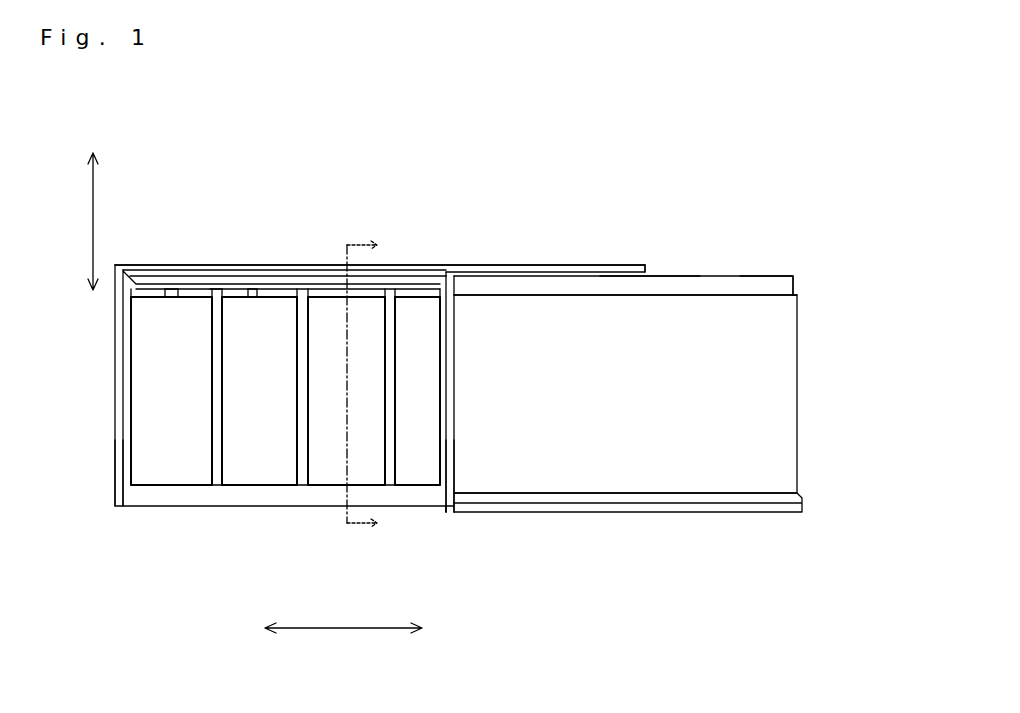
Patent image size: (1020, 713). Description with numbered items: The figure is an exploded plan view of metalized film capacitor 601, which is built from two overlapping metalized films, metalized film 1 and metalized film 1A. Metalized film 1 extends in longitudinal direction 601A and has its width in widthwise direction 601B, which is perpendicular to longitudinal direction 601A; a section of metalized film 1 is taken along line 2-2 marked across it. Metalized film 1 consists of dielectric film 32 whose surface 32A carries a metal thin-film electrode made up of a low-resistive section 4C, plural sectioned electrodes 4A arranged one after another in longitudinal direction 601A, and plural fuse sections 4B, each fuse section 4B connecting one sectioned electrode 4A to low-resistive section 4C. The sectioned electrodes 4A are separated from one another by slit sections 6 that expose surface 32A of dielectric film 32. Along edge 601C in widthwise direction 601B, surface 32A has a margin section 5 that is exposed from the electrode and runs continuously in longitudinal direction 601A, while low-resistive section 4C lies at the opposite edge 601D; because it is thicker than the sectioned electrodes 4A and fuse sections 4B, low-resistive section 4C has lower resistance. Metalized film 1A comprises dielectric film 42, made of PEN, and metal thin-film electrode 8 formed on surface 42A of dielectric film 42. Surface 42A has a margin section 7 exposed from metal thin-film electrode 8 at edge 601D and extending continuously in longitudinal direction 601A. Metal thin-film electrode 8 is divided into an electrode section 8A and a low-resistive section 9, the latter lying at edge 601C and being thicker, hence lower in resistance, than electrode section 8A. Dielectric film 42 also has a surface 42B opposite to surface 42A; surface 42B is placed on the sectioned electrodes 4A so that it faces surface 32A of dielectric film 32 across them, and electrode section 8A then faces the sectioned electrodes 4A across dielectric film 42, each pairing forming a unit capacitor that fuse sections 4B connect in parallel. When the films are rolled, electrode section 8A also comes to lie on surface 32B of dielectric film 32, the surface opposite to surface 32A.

The metalized film 1 is at (305, 278).
The metalized film 1A is at (687, 275).
The line 2- 2 is at (371, 385).
The sectioned electrodes 4A is at (245, 468).
The fuse sections 4B is at (172, 292).
The low-resistive section 4C is at (253, 280).
The margin section 5 is at (252, 497).
The slit sections 6 is at (215, 337).
The margin section 7 is at (652, 282).
The metal thin-film electrode 8 is at (776, 450).
The electrode section 8A is at (700, 318).
The low-resistive section 9 is at (708, 503).
The dielectric film 32 is at (302, 505).
The surface 32A is at (133, 497).
The surface 32B is at (115, 483).
The dielectric film 42 is at (588, 285).
The surface 42A is at (768, 290).
The surface 42B is at (443, 463).
The metalized film capacitor 601 is at (636, 187).
The longitudinal direction 601A is at (348, 628).
The widthwise direction 601B is at (93, 197).
The edge 601C is at (478, 515).
The edge 601D is at (458, 270).